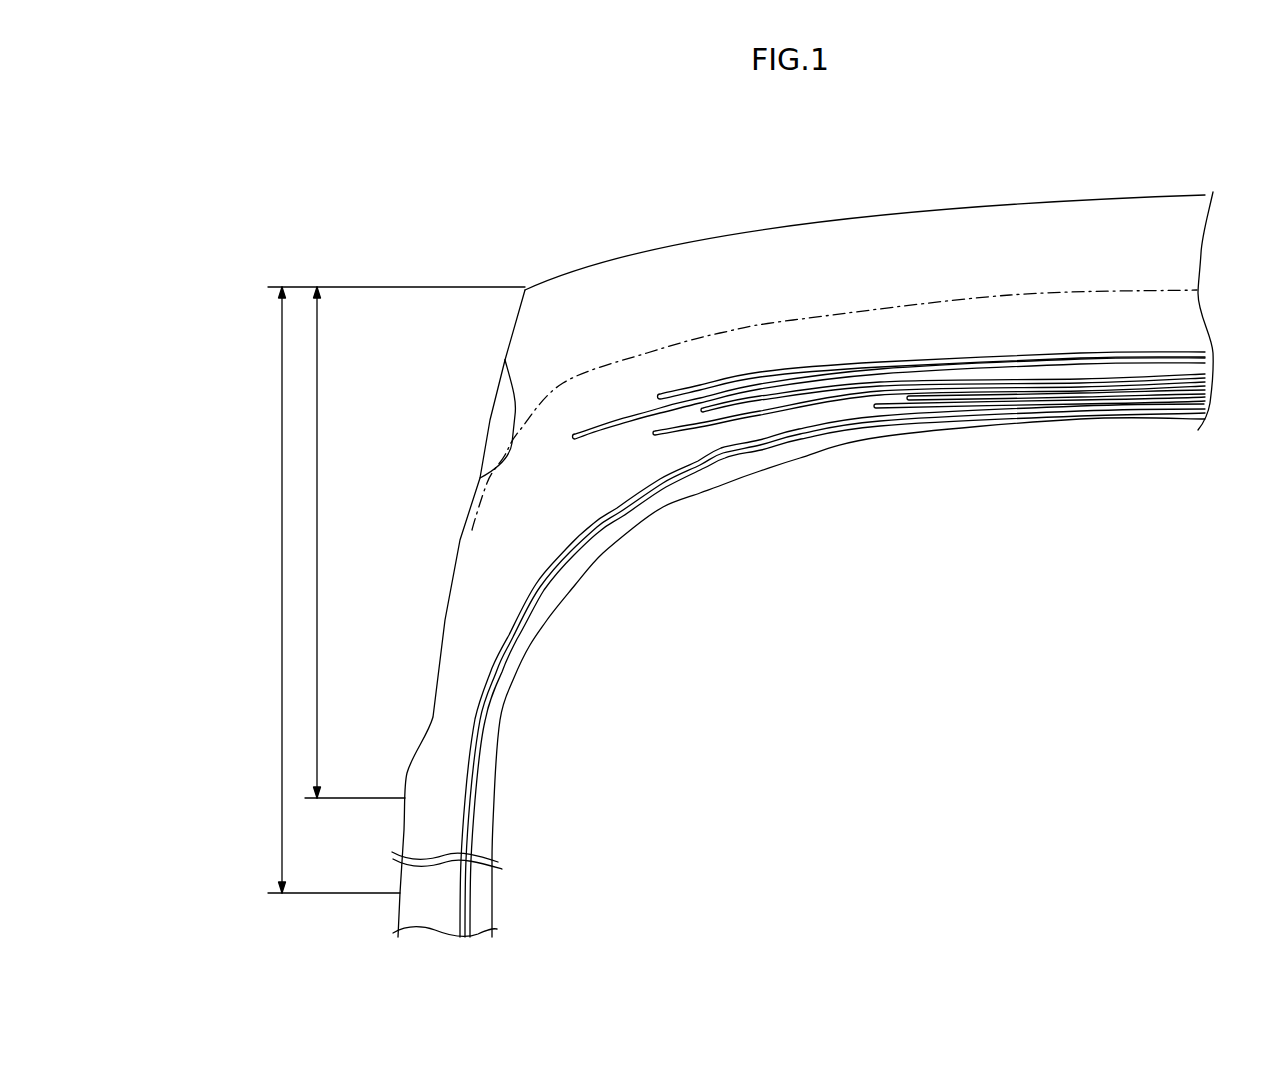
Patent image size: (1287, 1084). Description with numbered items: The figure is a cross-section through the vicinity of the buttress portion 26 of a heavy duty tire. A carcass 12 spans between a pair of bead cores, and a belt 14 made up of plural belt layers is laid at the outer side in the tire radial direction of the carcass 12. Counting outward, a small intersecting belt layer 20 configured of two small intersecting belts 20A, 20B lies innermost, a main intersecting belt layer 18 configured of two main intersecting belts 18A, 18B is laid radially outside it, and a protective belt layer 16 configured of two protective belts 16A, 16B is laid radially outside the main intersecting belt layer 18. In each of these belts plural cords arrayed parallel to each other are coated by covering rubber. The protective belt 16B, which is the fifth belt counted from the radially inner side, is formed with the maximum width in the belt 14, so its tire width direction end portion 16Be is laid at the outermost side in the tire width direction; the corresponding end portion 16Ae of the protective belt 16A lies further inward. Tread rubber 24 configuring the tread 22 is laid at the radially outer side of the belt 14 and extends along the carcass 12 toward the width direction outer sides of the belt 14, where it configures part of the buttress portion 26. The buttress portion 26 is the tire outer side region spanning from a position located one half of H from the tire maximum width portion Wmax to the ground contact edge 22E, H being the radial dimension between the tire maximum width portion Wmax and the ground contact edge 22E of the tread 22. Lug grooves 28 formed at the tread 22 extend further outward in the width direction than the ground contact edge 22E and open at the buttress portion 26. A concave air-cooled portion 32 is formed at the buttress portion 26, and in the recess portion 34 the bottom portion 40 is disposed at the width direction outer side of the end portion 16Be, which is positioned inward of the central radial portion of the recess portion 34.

The carcass 12 is at (468, 747).
The belt 14 is at (885, 360).
The protective belt layer 16 is at (833, 274).
The protective belt 16A is at (713, 398).
The protective belt 16B is at (608, 413).
The tire width direction end portion of protective belt 16A 16Ae is at (662, 396).
The tire width direction end portion 16Be is at (574, 436).
The main intersecting belt layer 18 is at (929, 502).
The main intersecting belt 18A is at (713, 410).
The main intersecting belt 18B is at (657, 440).
The small intersecting belt layer 20 is at (1035, 473).
The small intersecting belt 20A is at (937, 405).
The small intersecting belt 20B is at (1018, 503).
The tread 22 is at (1116, 194).
The ground contact edge 22E is at (527, 287).
The tread rubber 24 is at (923, 262).
The buttress portion 26 is at (507, 347).
The lug groove 28 is at (1010, 295).
The air-cooled portion 32 is at (510, 407).
The recess portion 34 is at (512, 438).
The bottom portion 40 is at (512, 427).
The dimension in the tire radial direction H is at (280, 573).
The tire maximum width portion Wmax is at (398, 893).